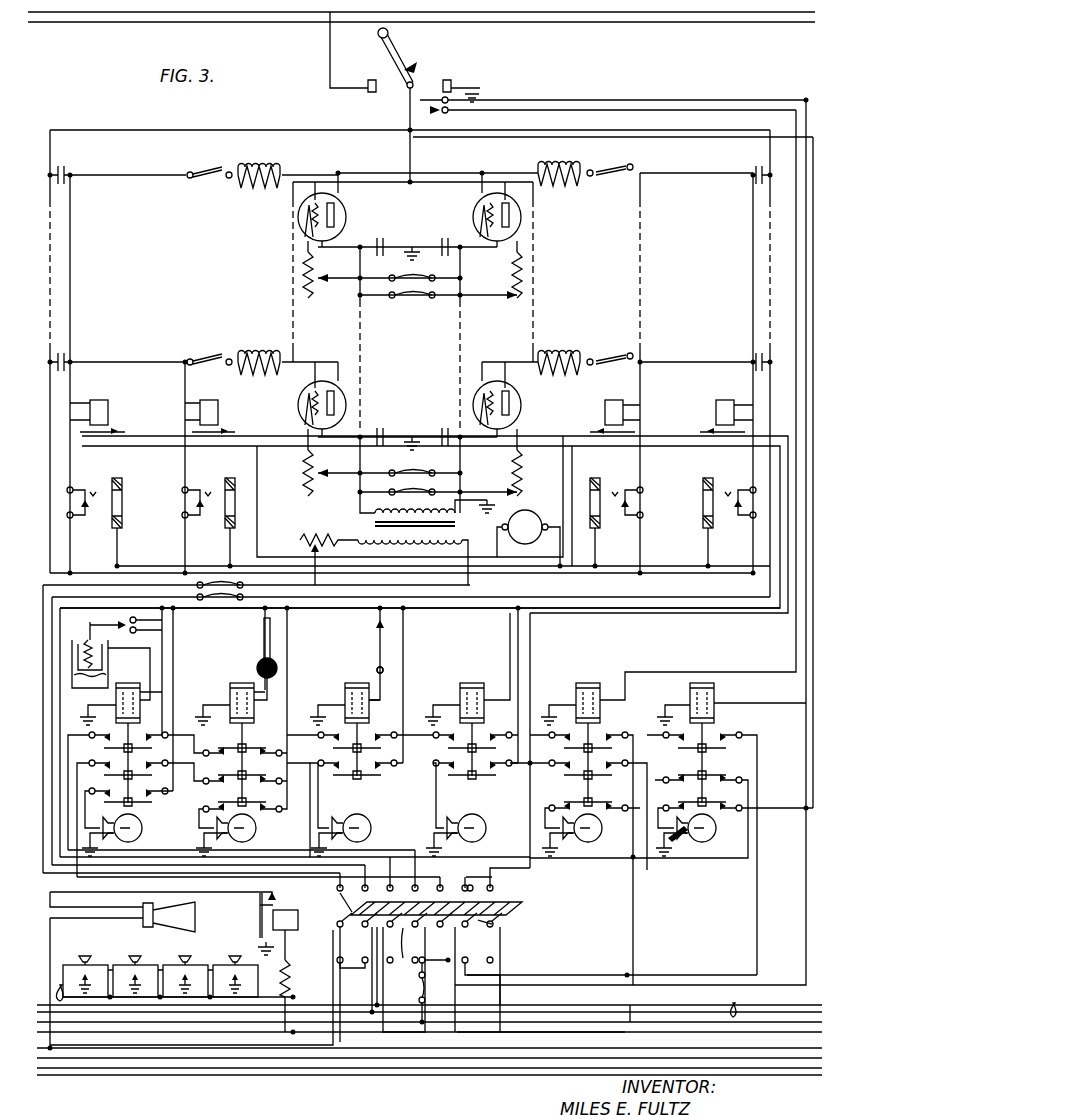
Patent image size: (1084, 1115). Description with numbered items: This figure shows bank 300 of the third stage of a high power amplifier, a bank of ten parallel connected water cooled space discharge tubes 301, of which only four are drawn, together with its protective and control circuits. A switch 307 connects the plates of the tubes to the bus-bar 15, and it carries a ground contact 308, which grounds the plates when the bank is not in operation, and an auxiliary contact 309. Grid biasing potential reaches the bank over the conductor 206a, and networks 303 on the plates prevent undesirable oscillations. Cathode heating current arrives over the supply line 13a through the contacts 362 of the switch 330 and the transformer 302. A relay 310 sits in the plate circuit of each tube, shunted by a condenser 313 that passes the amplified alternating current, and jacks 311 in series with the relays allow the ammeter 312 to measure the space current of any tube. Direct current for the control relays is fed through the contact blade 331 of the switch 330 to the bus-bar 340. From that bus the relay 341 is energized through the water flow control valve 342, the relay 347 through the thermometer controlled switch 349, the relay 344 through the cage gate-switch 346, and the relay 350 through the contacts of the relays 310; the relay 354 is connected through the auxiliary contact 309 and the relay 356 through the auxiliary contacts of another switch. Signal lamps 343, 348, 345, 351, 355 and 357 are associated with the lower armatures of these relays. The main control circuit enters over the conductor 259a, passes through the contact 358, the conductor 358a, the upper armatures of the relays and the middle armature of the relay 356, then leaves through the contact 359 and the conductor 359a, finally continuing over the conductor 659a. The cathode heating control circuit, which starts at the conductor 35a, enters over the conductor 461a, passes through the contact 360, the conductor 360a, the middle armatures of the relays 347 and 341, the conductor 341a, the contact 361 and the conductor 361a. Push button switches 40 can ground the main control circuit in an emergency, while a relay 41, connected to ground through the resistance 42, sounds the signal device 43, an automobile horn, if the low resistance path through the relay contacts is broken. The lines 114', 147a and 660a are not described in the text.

The bus-bar 15 is at (778, 24).
The conductor 206a is at (432, 156).
The switch 307 is at (400, 52).
The ground contact 308 is at (452, 82).
The auxiliary contact 309 is at (425, 103).
The condenser 313 is at (753, 358).
The network 303 is at (582, 360).
The space discharge tube 301 is at (533, 408).
The bank of tubes 300 is at (413, 336).
The relay 310 is at (725, 400).
The jack 311 is at (708, 478).
The ammeter 312 is at (530, 518).
The transformer 302 is at (358, 533).
The water flow control valve 342 is at (110, 652).
The relay 341 is at (140, 667).
The thermometer controlled switch 349 is at (258, 633).
The relay 347 is at (245, 667).
The bus-bar 340 is at (318, 612).
The cage gate-switch 346 is at (378, 649).
The relay 344 is at (357, 667).
The relay 350 is at (473, 667).
The relay 354 is at (589, 667).
The relay 356 is at (698, 675).
The conductor 360a is at (306, 786).
The signal lamp 343 is at (142, 828).
The signal lamp 348 is at (256, 828).
The signal lamp 345 is at (371, 828).
The signal lamp 351 is at (486, 828).
The signal lamp 355 is at (590, 842).
The signal lamp 357 is at (704, 842).
The conductor 341a is at (258, 898).
The signal device 43 is at (172, 920).
The cathode heating supply line 13a is at (737, 1006).
The push button switch 40 is at (232, 962).
The relay 41 is at (295, 929).
The resistance 42 is at (290, 978).
The switch 330 is at (524, 905).
The contact 360 is at (362, 912).
The contact 361 is at (345, 918).
The conductor 361a is at (327, 992).
The contacts 362 is at (398, 979).
The contact blade 331 is at (420, 1000).
The contact 358 is at (470, 928).
The conductor 358a is at (473, 890).
The contact 359 is at (480, 922).
The conductor 359a is at (503, 997).
The bus line 114' is at (429, 1091).
The bus line 147a is at (125, 1068).
The conductor 259a is at (195, 1035).
The conductor 35a is at (268, 1052).
The bus line 660a is at (333, 1062).
The conductor 461a is at (628, 1010).
The conductor 659a is at (470, 1040).